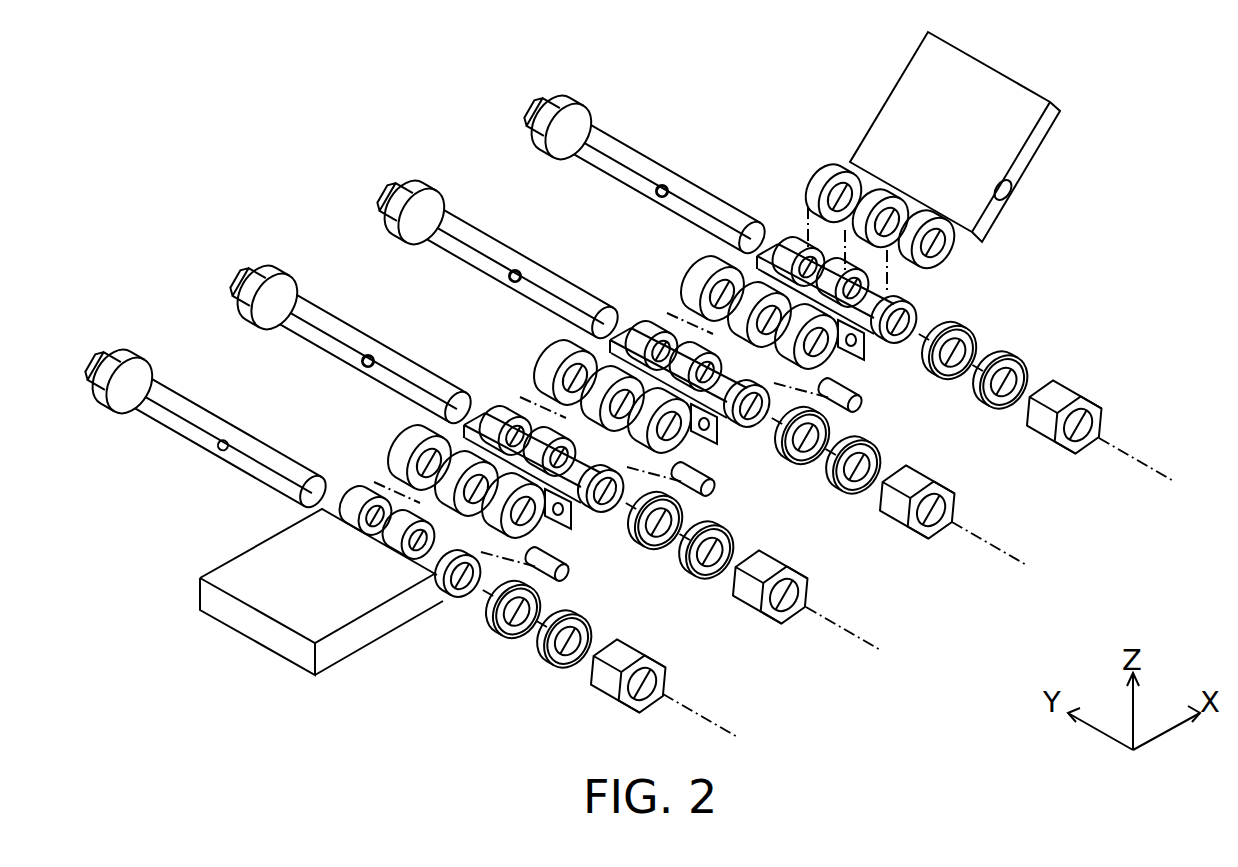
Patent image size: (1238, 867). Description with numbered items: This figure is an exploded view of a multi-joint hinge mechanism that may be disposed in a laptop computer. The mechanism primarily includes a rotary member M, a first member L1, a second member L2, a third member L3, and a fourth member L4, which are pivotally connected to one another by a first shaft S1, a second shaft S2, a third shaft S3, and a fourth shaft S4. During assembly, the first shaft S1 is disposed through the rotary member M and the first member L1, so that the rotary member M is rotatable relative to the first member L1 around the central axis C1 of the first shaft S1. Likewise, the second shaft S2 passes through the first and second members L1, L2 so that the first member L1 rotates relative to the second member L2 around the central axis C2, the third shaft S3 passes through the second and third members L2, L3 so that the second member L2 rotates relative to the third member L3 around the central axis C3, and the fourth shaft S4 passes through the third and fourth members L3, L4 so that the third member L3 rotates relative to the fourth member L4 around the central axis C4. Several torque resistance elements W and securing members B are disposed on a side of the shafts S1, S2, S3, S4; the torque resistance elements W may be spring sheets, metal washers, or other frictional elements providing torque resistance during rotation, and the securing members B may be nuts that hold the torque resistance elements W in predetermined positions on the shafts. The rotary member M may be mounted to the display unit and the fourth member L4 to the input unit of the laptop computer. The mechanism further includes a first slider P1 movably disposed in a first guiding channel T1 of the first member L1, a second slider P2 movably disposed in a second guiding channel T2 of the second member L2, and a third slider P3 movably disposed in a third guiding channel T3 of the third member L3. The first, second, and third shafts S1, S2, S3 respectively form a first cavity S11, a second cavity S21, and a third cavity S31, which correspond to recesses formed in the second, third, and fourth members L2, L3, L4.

The rotary member M is at (982, 72).
The first shaft S1 is at (597, 140).
The first cavity S11 is at (655, 194).
The second shaft S2 is at (450, 225).
The second cavity S21 is at (508, 279).
The third shaft S3 is at (303, 310).
The third cavity S31 is at (361, 364).
The fourth shaft S4 is at (158, 394).
The first member L1 is at (921, 356).
The second member L2 is at (774, 440).
The third member L3 is at (628, 525).
The fourth member L4 is at (278, 612).
The first guiding channel T1 is at (877, 357).
The second guiding channel T2 is at (730, 441).
The third guiding channel T3 is at (585, 525).
The first slider P1 is at (863, 410).
The second slider P2 is at (716, 494).
The third slider P3 is at (570, 579).
The torque resistance element W is at (985, 405).
The securing member B is at (1045, 440).
The central axis of the first shaft C1 is at (1199, 490).
The central axis of the second shaft C2 is at (1052, 575).
The central axis of the third shaft C3 is at (905, 660).
The central axis of the fourth shaft C4 is at (763, 744).